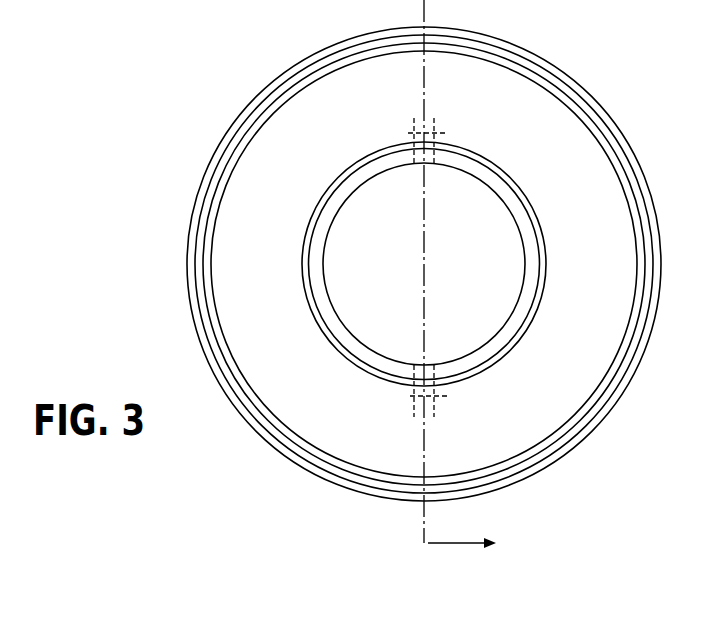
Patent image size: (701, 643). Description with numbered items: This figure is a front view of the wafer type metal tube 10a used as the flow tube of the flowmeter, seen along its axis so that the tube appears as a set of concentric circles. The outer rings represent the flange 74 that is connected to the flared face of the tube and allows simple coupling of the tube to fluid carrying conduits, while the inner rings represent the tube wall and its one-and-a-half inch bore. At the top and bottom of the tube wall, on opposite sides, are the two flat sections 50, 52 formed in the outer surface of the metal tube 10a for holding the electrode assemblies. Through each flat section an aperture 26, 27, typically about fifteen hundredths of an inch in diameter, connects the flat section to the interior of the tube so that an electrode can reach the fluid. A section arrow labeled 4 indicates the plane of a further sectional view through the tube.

The wafer type metal tube 10a is at (193, 62).
The flange 74 is at (338, 88).
The flat section 50 is at (400, 131).
The aperture 26 is at (441, 118).
The flat section 52 is at (399, 398).
The aperture 27 is at (436, 406).
The section line 4 is at (473, 544).